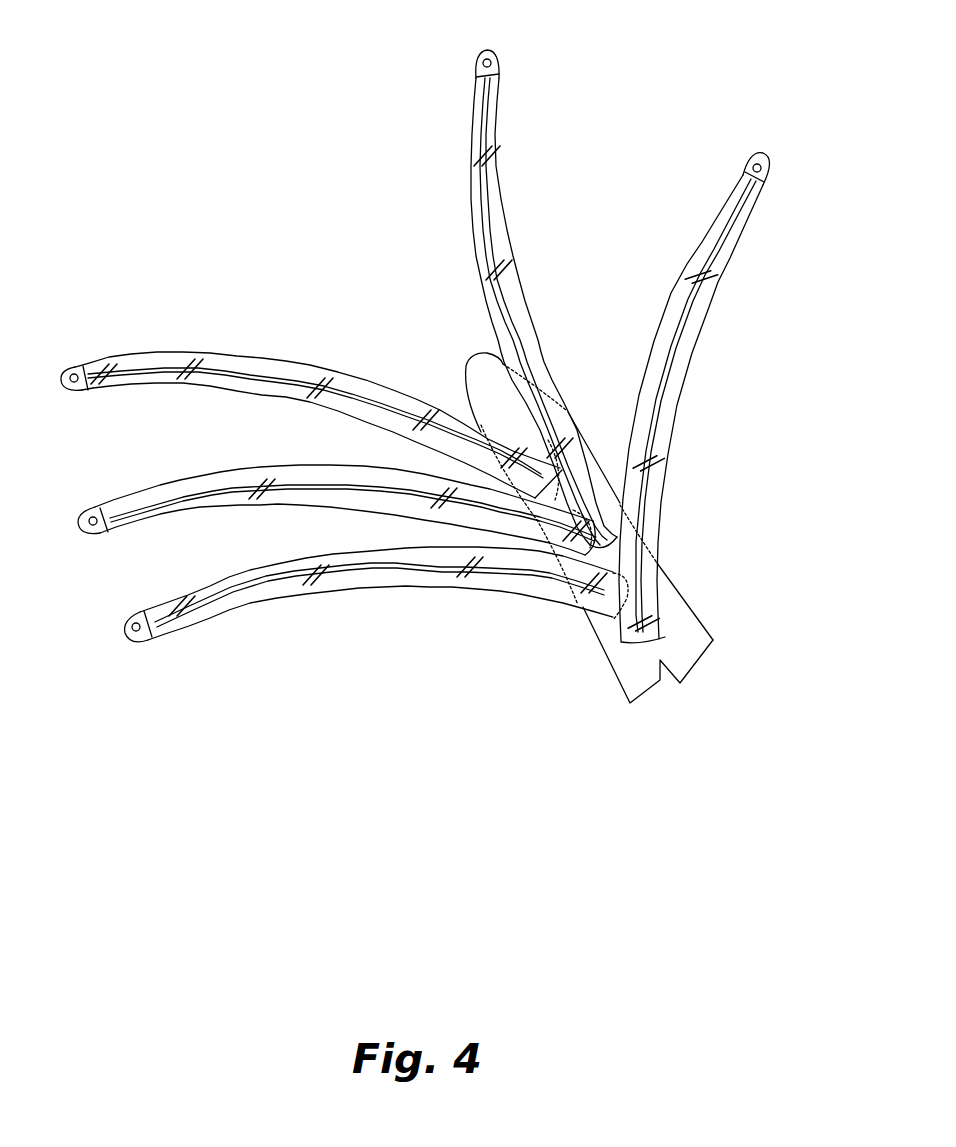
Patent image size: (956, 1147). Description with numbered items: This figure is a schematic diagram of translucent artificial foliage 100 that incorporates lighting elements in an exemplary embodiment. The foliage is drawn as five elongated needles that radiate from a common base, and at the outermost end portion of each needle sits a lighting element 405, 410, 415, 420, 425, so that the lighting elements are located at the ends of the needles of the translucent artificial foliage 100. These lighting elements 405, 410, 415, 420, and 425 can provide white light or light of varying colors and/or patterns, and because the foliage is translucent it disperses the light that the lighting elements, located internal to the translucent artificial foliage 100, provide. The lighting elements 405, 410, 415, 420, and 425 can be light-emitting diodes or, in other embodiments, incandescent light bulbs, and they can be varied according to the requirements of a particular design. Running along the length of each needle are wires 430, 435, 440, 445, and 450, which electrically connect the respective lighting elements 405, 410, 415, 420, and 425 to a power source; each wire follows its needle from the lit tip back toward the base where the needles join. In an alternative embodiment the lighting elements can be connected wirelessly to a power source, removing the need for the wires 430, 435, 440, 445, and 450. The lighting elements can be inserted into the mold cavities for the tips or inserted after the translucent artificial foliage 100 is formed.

The translucent artificial foliage 100 is at (400, 268).
The lighting element 405 is at (141, 634).
The lighting element 410 is at (102, 528).
The lighting element 415 is at (73, 382).
The lighting element 420 is at (480, 62).
The lighting element 425 is at (766, 168).
The wire 430 is at (400, 566).
The wire 435 is at (320, 489).
The wire 440 is at (338, 395).
The wire 445 is at (512, 323).
The wire 450 is at (685, 302).